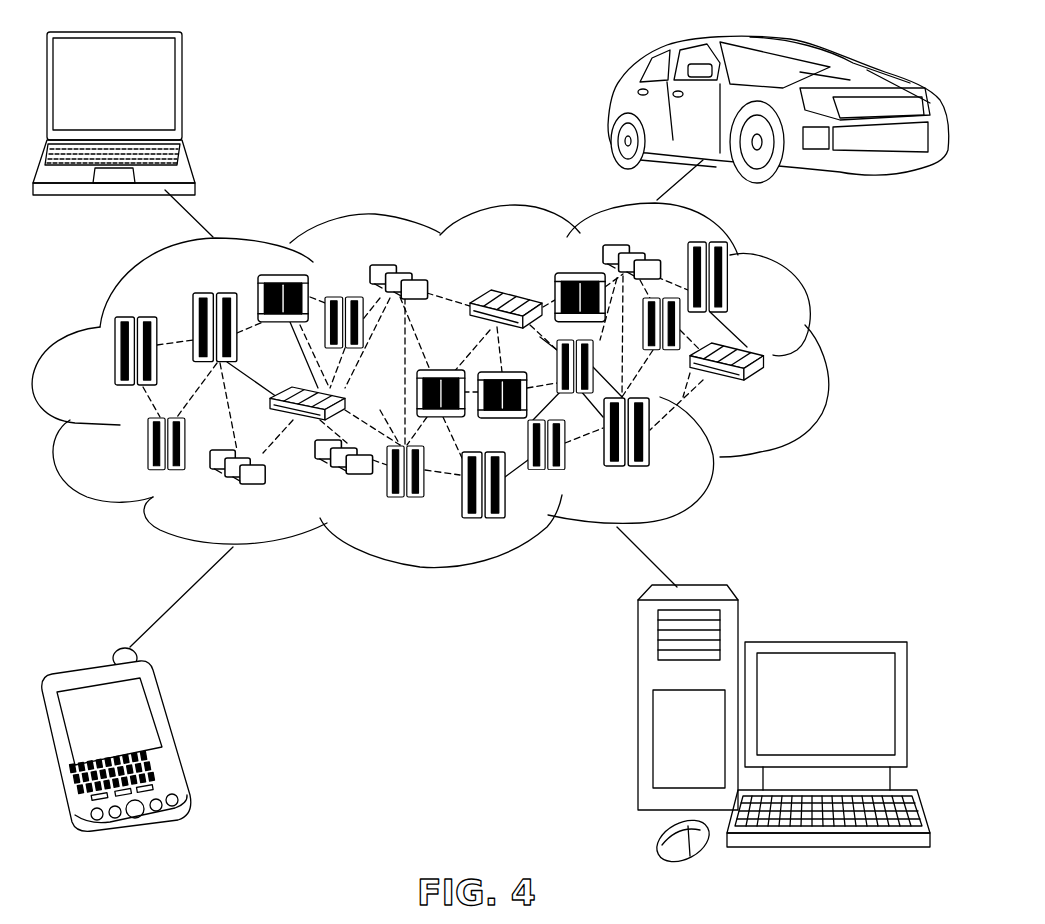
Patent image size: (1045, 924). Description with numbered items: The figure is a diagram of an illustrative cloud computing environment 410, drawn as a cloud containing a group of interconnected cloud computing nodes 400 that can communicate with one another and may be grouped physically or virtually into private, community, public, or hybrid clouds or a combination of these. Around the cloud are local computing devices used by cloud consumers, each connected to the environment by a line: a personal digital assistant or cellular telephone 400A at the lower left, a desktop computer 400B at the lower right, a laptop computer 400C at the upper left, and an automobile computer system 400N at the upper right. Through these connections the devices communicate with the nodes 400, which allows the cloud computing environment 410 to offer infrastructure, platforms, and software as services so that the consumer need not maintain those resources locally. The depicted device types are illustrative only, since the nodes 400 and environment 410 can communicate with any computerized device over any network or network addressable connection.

The cloud computing nodes 400 is at (490, 451).
The cloud computing environment 410 is at (830, 360).
The personal digital assistant (PDA) or cellular telephone 400A is at (172, 735).
The desktop computer 400B is at (820, 642).
The laptop computer 400C is at (182, 93).
The automobile computer system 400N is at (610, 110).